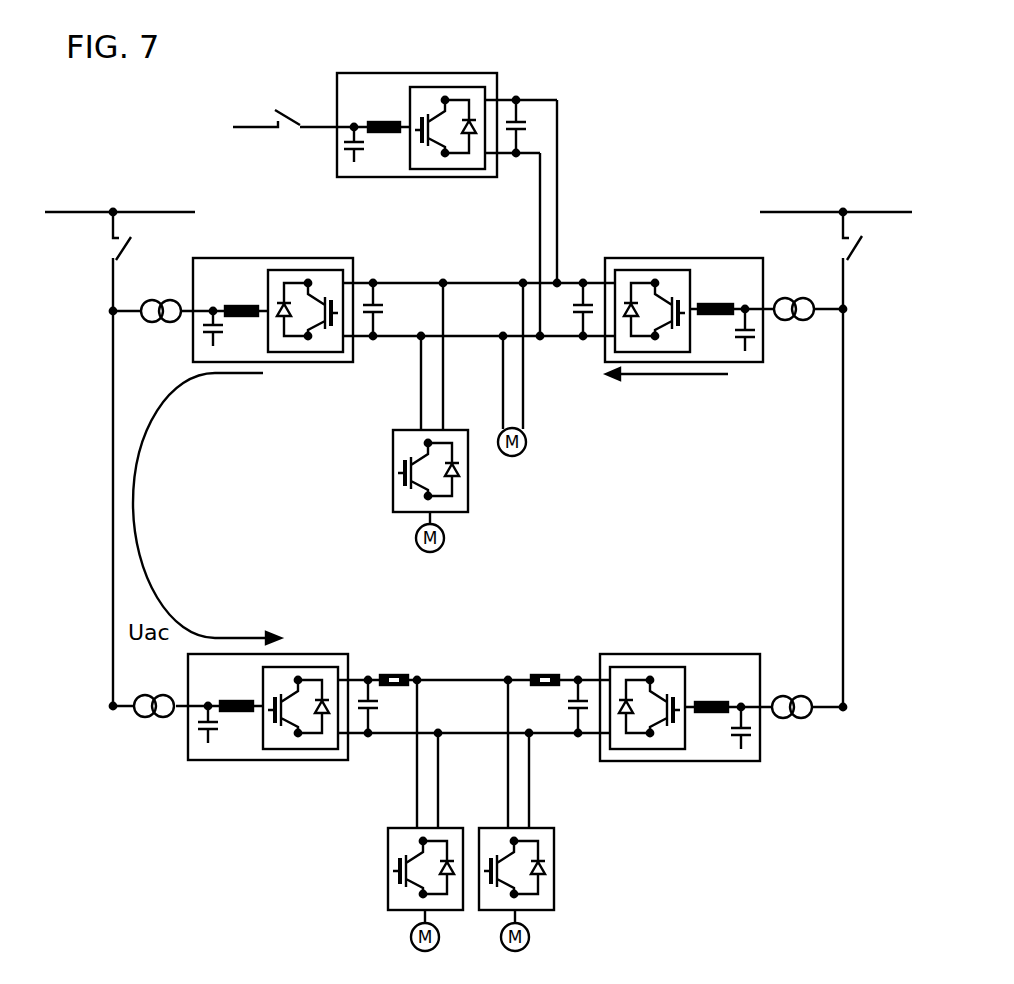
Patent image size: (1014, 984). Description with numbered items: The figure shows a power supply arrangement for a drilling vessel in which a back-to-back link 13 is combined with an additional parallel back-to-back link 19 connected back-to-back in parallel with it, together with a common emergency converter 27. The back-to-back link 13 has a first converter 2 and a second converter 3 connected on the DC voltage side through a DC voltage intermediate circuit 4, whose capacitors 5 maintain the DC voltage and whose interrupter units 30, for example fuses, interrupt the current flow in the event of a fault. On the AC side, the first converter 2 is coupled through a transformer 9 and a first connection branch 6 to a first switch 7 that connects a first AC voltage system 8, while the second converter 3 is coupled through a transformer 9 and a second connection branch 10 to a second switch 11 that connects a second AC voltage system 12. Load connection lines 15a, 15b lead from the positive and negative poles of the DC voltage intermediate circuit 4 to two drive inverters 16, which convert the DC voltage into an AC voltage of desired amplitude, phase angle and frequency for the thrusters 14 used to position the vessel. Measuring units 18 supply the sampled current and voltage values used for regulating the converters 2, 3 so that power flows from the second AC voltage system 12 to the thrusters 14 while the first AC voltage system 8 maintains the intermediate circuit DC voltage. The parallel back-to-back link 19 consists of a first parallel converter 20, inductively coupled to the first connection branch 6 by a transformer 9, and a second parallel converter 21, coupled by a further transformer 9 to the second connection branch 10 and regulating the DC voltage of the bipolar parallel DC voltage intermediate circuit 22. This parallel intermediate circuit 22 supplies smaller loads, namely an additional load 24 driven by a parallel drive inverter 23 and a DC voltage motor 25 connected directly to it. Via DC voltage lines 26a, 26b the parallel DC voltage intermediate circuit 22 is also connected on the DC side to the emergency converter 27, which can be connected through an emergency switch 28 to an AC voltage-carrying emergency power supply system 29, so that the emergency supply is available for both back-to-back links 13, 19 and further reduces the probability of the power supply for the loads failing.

The first converter 2 is at (313, 654).
The second converter 3 is at (762, 673).
The DC voltage intermediate circuit 4 is at (473, 659).
The capacitor 5 is at (366, 678).
The first connection branch 6 is at (112, 465).
The first switch 7 is at (112, 249).
The first AC voltage system 8 is at (190, 212).
The transformer 9 is at (152, 322).
The second connection branch 10 is at (842, 604).
The second switch 11 is at (840, 252).
The second AC voltage system 12 is at (793, 212).
The back-to-back link 13 is at (474, 644).
The thruster 14 is at (411, 937).
The load connection line 15a is at (416, 813).
The load connection line 15b is at (437, 756).
The drive inverter 16 is at (388, 883).
The measuring unit 18 is at (412, 815).
The parallel back-to-back link 19 is at (485, 250).
The first parallel converter 20 is at (291, 258).
The second parallel converter 21 is at (660, 258).
The parallel DC voltage intermediate circuit 22 is at (386, 281).
The parallel drive inverter 23 is at (393, 483).
The additional load 24 is at (416, 538).
The DC voltage motor 25 is at (526, 443).
The DC voltage line 26a is at (558, 120).
The DC voltage line 26b is at (540, 225).
The emergency converter 27 is at (393, 73).
The emergency switch 28 is at (285, 105).
The emergency power supply system 29 is at (257, 127).
The interrupter unit 30 is at (394, 675).